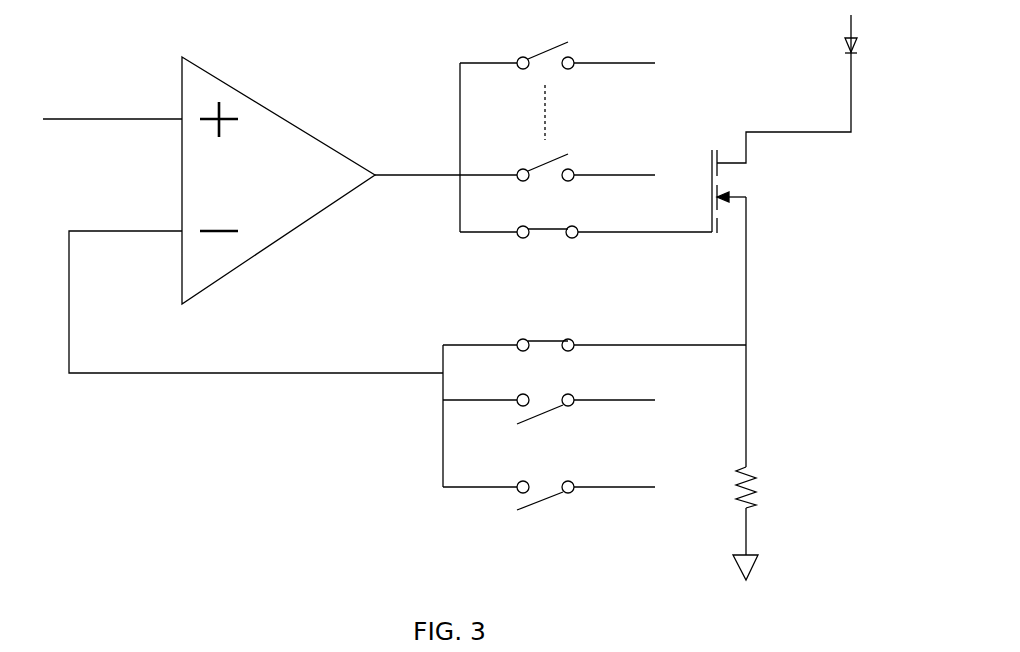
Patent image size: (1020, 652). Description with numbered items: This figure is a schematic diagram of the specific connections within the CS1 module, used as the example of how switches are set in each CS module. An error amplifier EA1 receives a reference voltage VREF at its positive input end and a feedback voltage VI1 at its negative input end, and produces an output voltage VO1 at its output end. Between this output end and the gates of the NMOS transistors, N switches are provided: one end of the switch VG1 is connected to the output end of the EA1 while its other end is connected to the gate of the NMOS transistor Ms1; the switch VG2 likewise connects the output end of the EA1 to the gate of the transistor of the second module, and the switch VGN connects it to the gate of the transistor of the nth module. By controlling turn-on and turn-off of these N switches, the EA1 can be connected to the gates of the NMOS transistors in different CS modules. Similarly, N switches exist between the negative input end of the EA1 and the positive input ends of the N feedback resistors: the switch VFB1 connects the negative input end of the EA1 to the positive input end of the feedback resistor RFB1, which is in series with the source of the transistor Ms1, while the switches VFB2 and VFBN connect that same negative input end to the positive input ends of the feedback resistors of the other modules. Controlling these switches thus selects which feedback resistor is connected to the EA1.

The reference voltage VREF is at (112, 101).
The feedback input voltage VI1 is at (256, 320).
The amplifier output voltage VO1 is at (446, 147).
The switch VGN is at (586, 51).
The switch VG2 is at (586, 163).
The switch VG1 is at (614, 220).
The NMOS transistor Ms1 is at (775, 241).
The switch VFB1 is at (631, 331).
The switch VFB2 is at (586, 396).
The switch VFBN is at (586, 481).
The feedback resistor RFB1 is at (770, 523).